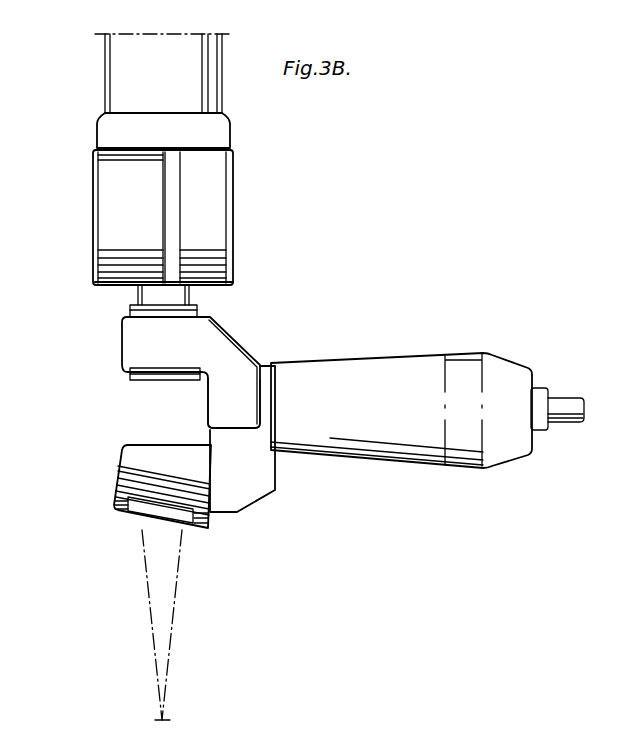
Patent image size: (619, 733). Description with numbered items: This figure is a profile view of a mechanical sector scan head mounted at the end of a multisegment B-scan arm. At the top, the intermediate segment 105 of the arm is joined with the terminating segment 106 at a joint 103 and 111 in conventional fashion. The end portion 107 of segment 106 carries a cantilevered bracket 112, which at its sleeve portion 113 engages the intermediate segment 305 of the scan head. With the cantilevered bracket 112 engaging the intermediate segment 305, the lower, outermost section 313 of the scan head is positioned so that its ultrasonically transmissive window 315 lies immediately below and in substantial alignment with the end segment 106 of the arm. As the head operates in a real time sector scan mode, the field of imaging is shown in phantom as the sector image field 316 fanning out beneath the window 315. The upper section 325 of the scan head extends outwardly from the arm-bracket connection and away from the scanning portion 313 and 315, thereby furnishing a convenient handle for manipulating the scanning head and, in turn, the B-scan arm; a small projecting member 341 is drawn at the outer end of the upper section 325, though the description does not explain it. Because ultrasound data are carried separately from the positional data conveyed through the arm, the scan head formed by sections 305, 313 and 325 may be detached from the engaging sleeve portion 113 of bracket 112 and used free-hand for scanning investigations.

The intermediate segment 105 is at (120, 80).
The joint 103 is at (93, 218).
The joint 111 is at (235, 218).
The terminating segment 106 is at (136, 297).
The cantilevered bracket 112 is at (122, 338).
The end portion 107 is at (130, 380).
The sleeve portion 113 is at (208, 400).
The intermediate segment of the scan head 305 is at (272, 482).
The upper section of the scan head 325 is at (390, 356).
The shaft 341 is at (565, 398).
The lower outermost section of the scan head 313 is at (118, 472).
The ultrasonically transmissive window 315 is at (132, 518).
The sector image field 316 is at (163, 626).